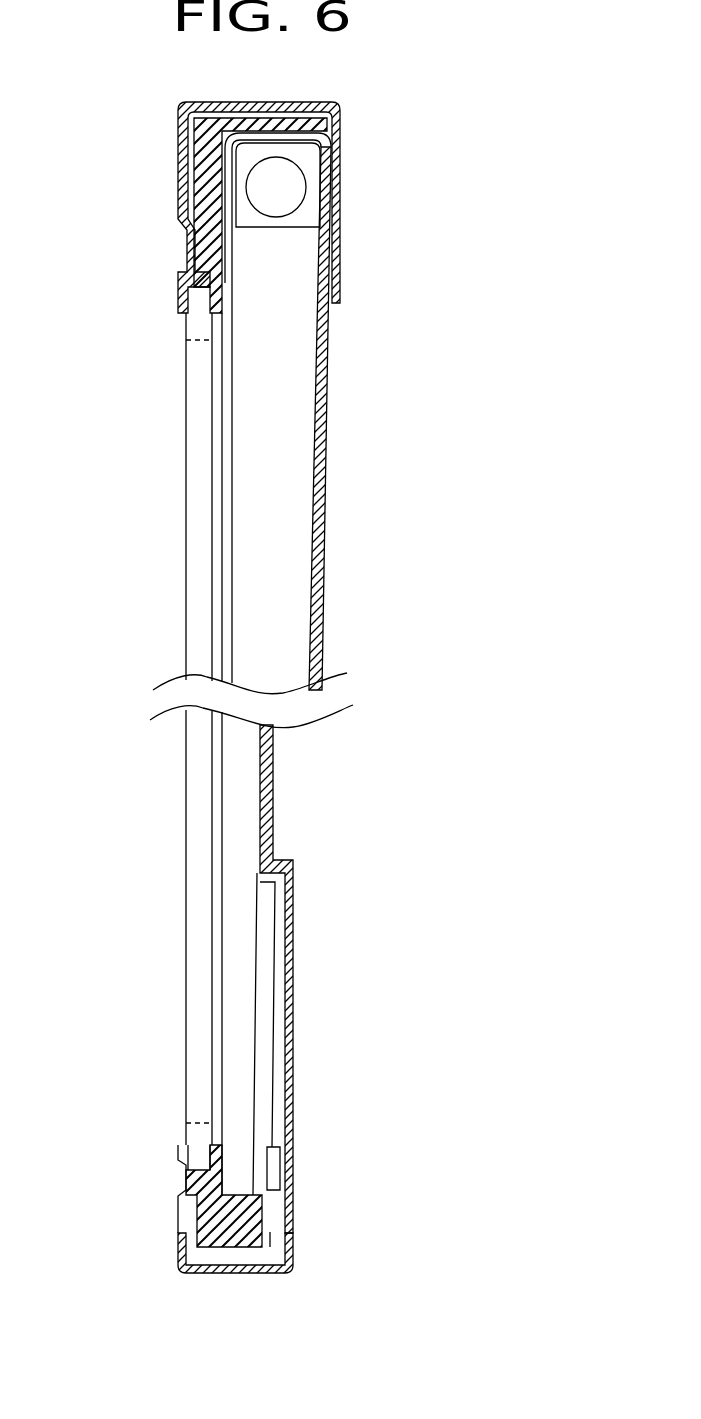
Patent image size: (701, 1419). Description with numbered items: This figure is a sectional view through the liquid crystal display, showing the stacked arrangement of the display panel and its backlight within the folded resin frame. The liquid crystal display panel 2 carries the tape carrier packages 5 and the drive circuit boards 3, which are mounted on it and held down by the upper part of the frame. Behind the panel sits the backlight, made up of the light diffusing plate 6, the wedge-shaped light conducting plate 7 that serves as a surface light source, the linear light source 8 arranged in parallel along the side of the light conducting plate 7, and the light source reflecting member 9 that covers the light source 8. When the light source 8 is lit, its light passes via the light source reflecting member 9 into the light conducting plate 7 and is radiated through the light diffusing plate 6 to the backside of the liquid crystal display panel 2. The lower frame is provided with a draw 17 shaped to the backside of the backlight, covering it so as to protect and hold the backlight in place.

The liquid crystal display panel 2 is at (200, 426).
The drive circuit boards 3 is at (272, 1075).
The tape carrier packages 5 is at (278, 1168).
The light diffusing plate 6 is at (222, 507).
The light conducting plate 7 is at (283, 415).
The light source 8 is at (283, 187).
The light source reflecting member 9 is at (323, 212).
The draw 17 is at (293, 938).